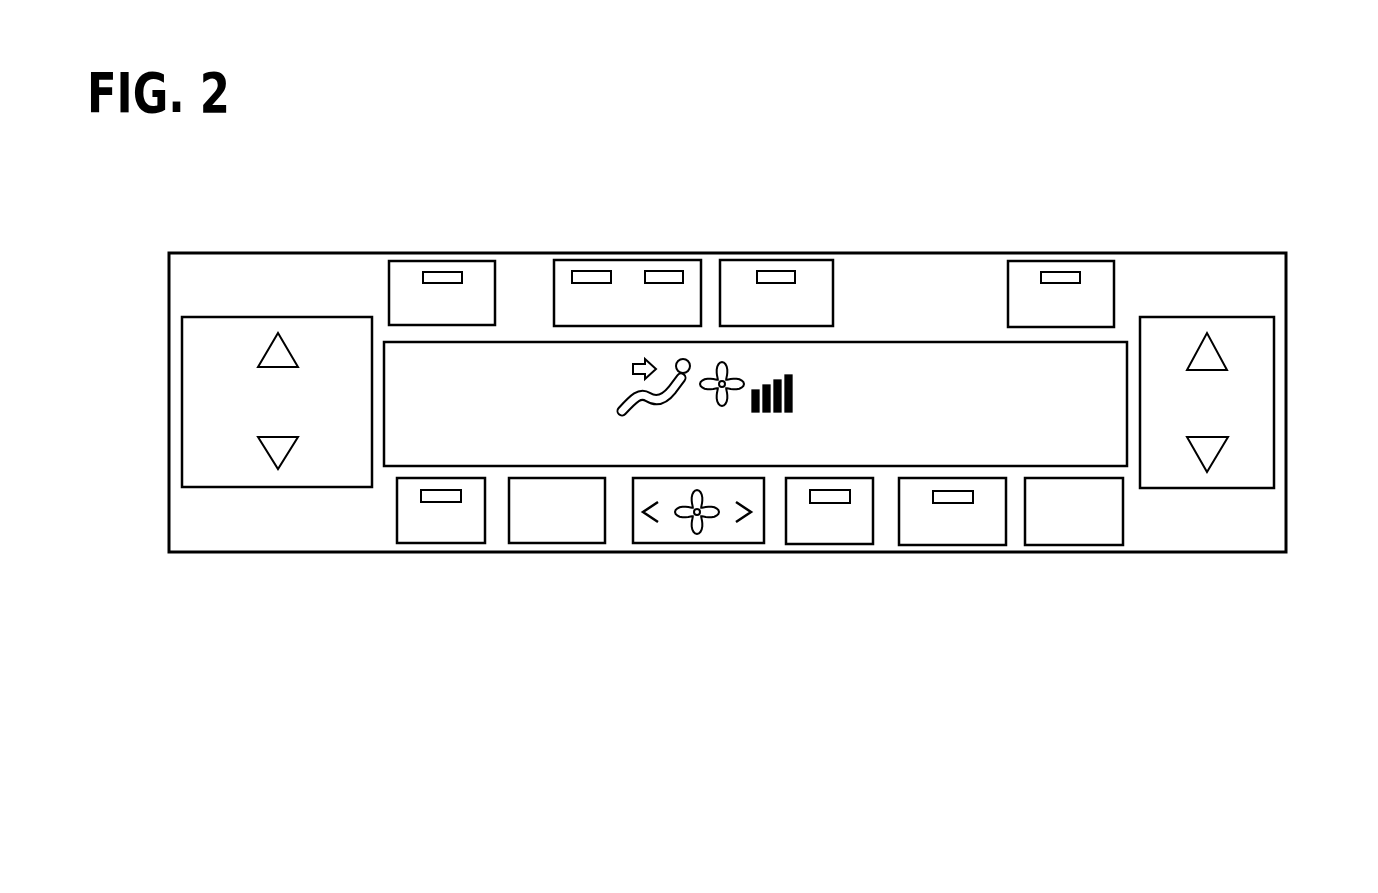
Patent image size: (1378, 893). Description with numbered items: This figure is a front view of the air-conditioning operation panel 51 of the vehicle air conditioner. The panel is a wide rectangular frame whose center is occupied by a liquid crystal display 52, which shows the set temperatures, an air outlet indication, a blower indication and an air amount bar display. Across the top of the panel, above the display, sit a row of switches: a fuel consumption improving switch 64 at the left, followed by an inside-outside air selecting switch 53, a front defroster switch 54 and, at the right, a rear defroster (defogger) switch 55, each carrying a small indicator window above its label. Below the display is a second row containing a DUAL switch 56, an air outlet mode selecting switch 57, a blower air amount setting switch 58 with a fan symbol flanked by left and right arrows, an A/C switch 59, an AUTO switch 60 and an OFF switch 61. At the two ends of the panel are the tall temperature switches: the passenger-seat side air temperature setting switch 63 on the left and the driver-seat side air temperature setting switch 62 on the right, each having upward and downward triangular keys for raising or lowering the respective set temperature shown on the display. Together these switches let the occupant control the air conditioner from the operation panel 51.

The air-conditioning operation panel 51 is at (288, 282).
The liquid crystal display 52 is at (932, 373).
The inside-outside air selecting switch 53 is at (625, 270).
The front defroster switch 54 is at (774, 270).
The rear defroster switch 55 is at (1058, 270).
The DUAL switch 56 is at (441, 543).
The air outlet mode selecting switch 57 is at (560, 543).
The blower air amount setting switch 58 is at (693, 543).
The A/C switch 59 is at (836, 544).
The AUTO switch 60 is at (957, 545).
The OFF switch 61 is at (1077, 545).
The driver-seat side air temperature setting switch 62 is at (1247, 470).
The passenger-seat side air temperature setting switch 63 is at (207, 468).
The fuel consumption improving switch 64 is at (440, 270).